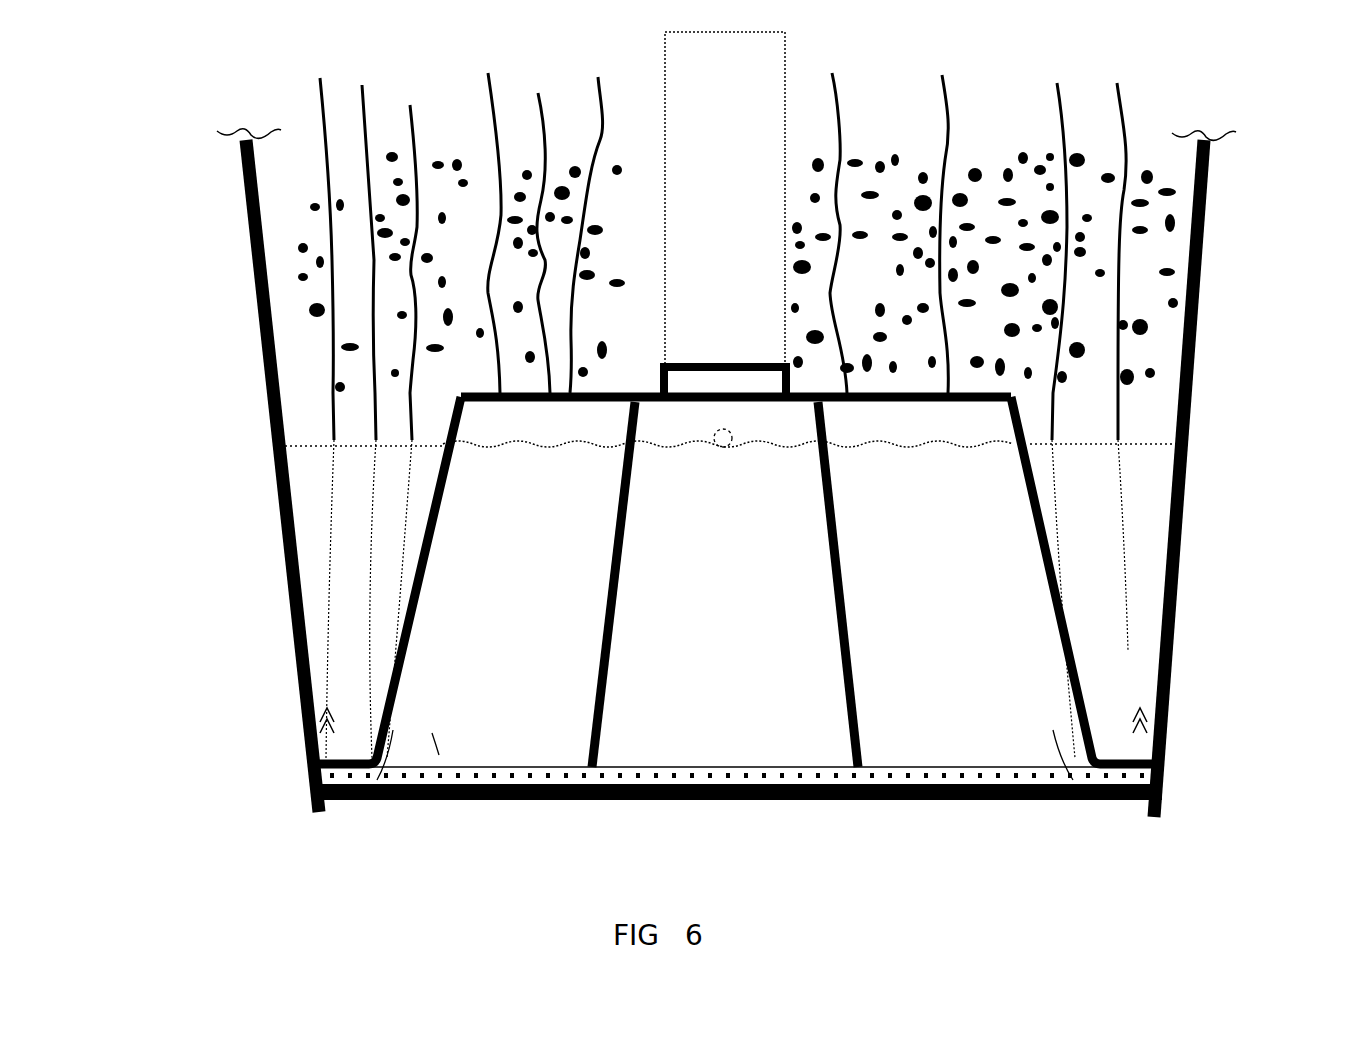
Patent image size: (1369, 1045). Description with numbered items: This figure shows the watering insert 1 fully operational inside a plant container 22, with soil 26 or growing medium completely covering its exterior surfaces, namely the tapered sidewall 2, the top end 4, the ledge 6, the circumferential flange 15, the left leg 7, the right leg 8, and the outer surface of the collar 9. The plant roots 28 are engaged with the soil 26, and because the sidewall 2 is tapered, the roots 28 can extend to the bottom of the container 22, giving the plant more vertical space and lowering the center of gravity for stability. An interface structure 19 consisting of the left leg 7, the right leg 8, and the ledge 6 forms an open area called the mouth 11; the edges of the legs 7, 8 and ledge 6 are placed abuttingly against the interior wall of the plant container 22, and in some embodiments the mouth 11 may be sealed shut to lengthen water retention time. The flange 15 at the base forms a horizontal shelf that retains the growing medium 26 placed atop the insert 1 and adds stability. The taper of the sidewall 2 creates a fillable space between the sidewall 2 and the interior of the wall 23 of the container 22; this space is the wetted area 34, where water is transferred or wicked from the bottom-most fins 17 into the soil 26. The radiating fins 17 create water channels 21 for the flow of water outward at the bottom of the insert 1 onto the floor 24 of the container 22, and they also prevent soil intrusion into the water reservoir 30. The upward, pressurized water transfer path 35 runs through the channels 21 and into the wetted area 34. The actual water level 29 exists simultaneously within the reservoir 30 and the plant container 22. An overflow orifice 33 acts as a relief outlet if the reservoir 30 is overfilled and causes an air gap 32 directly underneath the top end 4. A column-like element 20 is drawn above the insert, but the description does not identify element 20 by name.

The watering insert 1 is at (780, 565).
The sidewall 2 is at (383, 670).
The top end 4 is at (564, 367).
The ledge 6 is at (645, 392).
The left leg 7 is at (654, 580).
The right leg 8 is at (850, 737).
The collar 9 is at (799, 382).
The mouth 11 is at (643, 538).
The flange 15 is at (417, 730).
The fins 17 is at (737, 828).
The interface structure 19 is at (600, 582).
The supply column 20 is at (662, 68).
The water channels 21 is at (758, 781).
The plant container 22 is at (728, 473).
The wall 23 is at (248, 245).
The floor 24 is at (950, 801).
The soil 26 is at (297, 404).
The plant roots 28 is at (320, 121).
The water level 29 is at (967, 450).
The water reservoir 30 is at (959, 633).
The air gap 32 is at (567, 427).
The overflow orifice 33 is at (721, 452).
The wetted area 34 is at (343, 567).
The water transfer path 35 is at (441, 759).